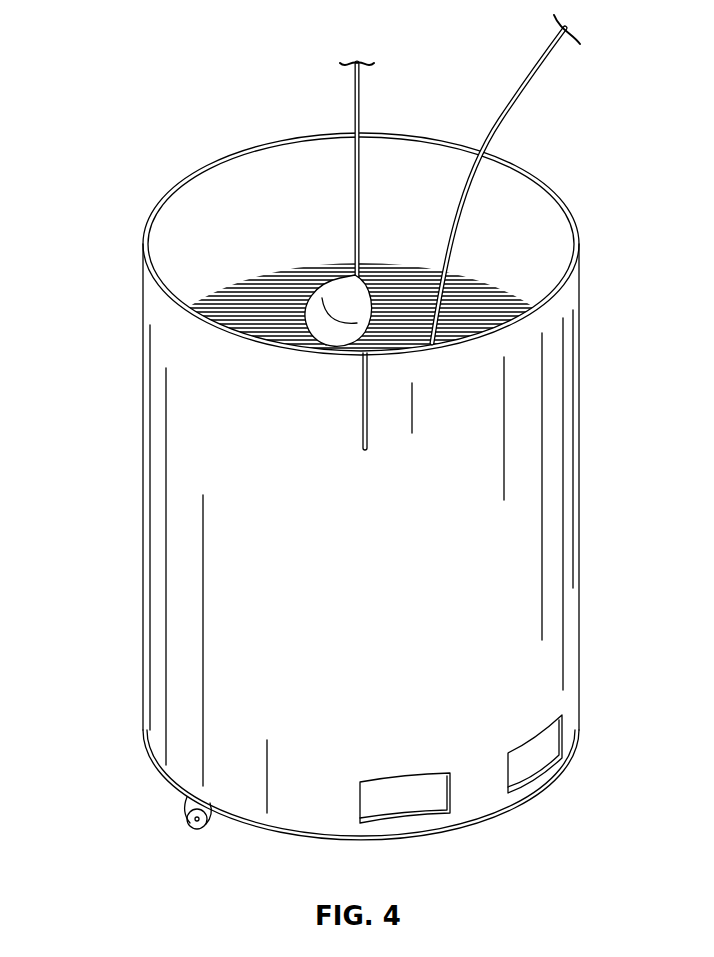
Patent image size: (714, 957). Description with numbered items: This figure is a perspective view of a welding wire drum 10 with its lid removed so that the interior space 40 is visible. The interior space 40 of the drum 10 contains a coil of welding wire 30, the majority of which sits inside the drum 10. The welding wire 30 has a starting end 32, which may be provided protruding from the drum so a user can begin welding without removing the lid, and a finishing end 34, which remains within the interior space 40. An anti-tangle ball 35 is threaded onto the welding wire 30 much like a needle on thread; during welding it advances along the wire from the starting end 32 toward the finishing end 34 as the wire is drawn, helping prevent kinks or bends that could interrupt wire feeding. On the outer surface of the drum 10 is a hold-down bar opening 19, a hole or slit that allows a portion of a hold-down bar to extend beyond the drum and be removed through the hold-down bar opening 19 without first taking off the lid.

The drum 10 is at (118, 543).
The hold-down bar opening 19 is at (362, 415).
The welding wire 30 is at (283, 290).
The starting end 32 is at (358, 107).
The finishing end 34 is at (525, 64).
The anti-tangle ball 35 is at (345, 293).
The interior space 40 is at (222, 231).